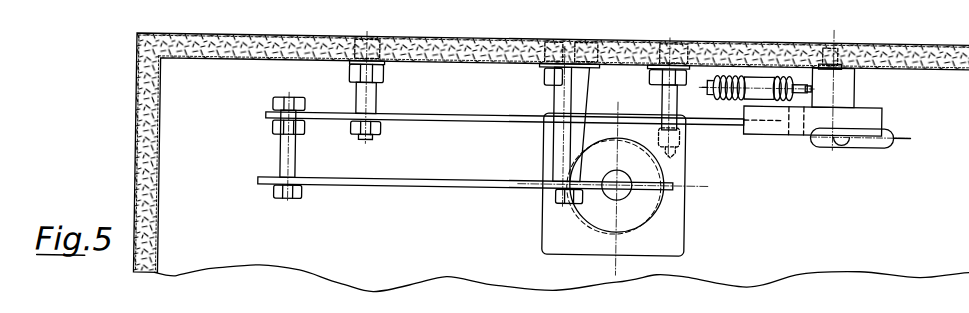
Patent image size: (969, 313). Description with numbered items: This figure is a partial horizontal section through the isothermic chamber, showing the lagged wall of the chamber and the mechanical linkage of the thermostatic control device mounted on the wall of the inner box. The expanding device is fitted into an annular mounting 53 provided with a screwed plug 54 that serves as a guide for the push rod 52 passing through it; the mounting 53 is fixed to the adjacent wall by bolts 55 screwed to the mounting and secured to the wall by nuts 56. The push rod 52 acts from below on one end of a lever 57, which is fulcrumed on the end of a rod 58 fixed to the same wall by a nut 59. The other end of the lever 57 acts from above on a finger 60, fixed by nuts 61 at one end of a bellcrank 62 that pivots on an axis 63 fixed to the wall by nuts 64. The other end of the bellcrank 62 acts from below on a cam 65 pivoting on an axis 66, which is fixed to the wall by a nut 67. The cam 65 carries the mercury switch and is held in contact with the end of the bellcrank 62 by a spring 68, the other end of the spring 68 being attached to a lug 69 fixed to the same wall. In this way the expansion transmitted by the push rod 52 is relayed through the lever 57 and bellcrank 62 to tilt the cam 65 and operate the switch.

The push rod 52 is at (623, 168).
The annular mounting 53 is at (678, 160).
The screwed plug 54 is at (642, 210).
The bolts 55 is at (663, 95).
The nuts 56 is at (548, 36).
The lever 57 is at (425, 178).
The rod 58 is at (580, 91).
The nut 59 is at (592, 35).
The finger 60 is at (298, 152).
The nuts 61 is at (280, 103).
The bellcrank 62 is at (440, 116).
The axis 63 is at (378, 99).
The nuts 64 is at (373, 36).
The cam 65 is at (788, 122).
The axis 66 is at (826, 56).
The nut 67 is at (857, 34).
The spring 68 is at (760, 68).
The lug 69 is at (712, 70).